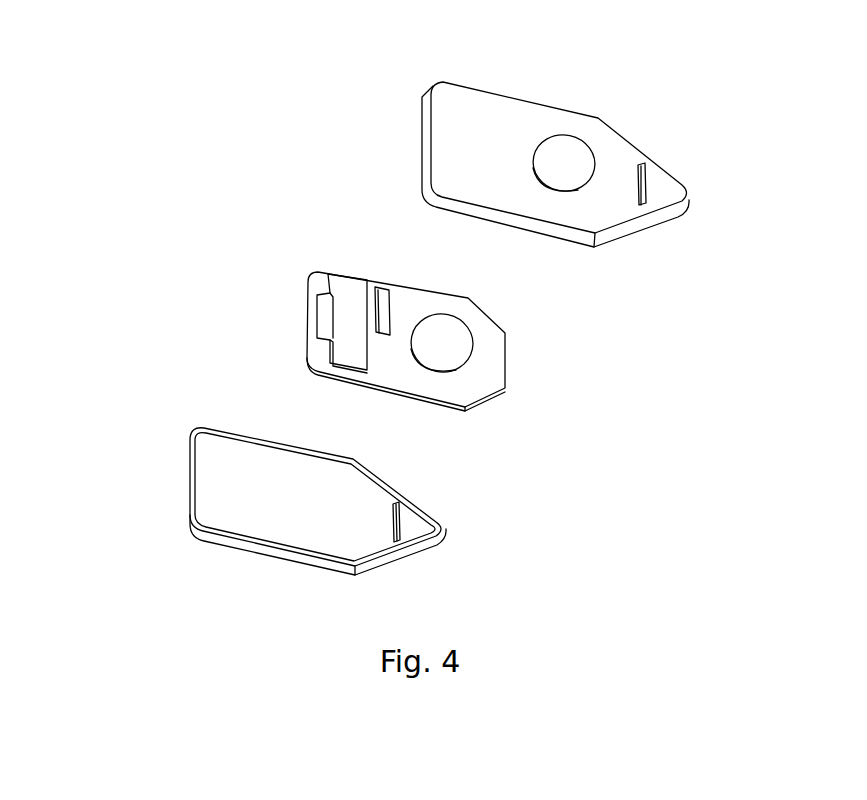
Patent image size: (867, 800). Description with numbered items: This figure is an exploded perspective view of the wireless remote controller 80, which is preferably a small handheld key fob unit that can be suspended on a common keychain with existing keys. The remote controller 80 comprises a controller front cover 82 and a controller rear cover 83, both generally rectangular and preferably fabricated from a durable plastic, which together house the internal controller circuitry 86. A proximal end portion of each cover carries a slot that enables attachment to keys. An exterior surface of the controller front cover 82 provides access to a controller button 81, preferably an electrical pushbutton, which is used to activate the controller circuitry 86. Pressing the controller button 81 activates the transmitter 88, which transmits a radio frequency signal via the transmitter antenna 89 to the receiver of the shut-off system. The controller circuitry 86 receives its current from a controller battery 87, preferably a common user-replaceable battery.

The wireless remote controller 80 is at (136, 250).
The controller button 81 is at (566, 148).
The controller front cover 82 is at (466, 100).
The controller rear cover 83 is at (225, 523).
The controller circuitry 86 is at (487, 356).
The controller battery 87 is at (448, 326).
The transmitter 88 is at (382, 300).
The transmitter antenna 89 is at (340, 325).